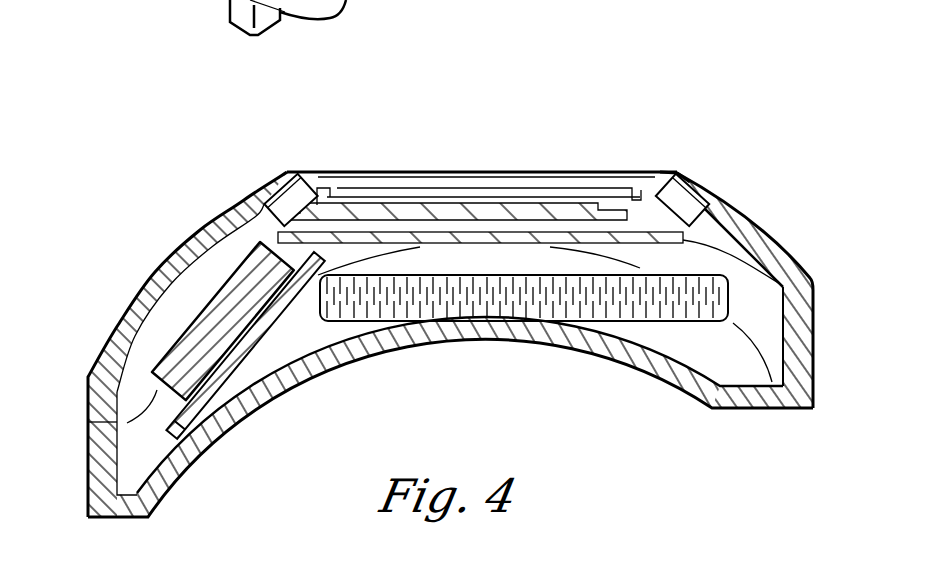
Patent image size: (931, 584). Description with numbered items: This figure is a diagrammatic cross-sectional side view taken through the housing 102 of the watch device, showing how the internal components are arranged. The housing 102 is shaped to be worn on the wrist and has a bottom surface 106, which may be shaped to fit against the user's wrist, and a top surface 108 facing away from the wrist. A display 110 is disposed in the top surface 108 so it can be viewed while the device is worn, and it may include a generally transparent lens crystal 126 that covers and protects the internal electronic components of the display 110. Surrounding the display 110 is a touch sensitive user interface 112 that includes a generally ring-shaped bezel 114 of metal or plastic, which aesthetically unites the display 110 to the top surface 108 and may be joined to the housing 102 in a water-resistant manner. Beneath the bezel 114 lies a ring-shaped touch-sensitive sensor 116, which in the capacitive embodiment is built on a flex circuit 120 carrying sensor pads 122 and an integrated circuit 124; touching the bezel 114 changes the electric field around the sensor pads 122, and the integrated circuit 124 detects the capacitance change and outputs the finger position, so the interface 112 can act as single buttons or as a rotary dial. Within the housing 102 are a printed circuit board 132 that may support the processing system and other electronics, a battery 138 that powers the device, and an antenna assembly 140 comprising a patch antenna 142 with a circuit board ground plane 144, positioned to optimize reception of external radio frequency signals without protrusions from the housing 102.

The housing 102 is at (675, 56).
The bottom surface 106 is at (708, 404).
The top surface 108 is at (168, 270).
The display 110 is at (560, 208).
The touch sensitive user interface 112 is at (681, 172).
The bezel 114 is at (283, 172).
The touch-sensitive sensor 116 is at (748, 222).
The flex circuit 120 is at (327, 190).
The sensor pads 122 is at (278, 202).
The integrated circuit 124 is at (272, 222).
The lens crystal 126 is at (503, 172).
The printed circuit board 132 is at (809, 280).
The battery 138 is at (493, 318).
The antenna assembly 140 is at (178, 340).
The patch antenna 142 is at (120, 437).
The circuit board ground plane 144 is at (180, 422).